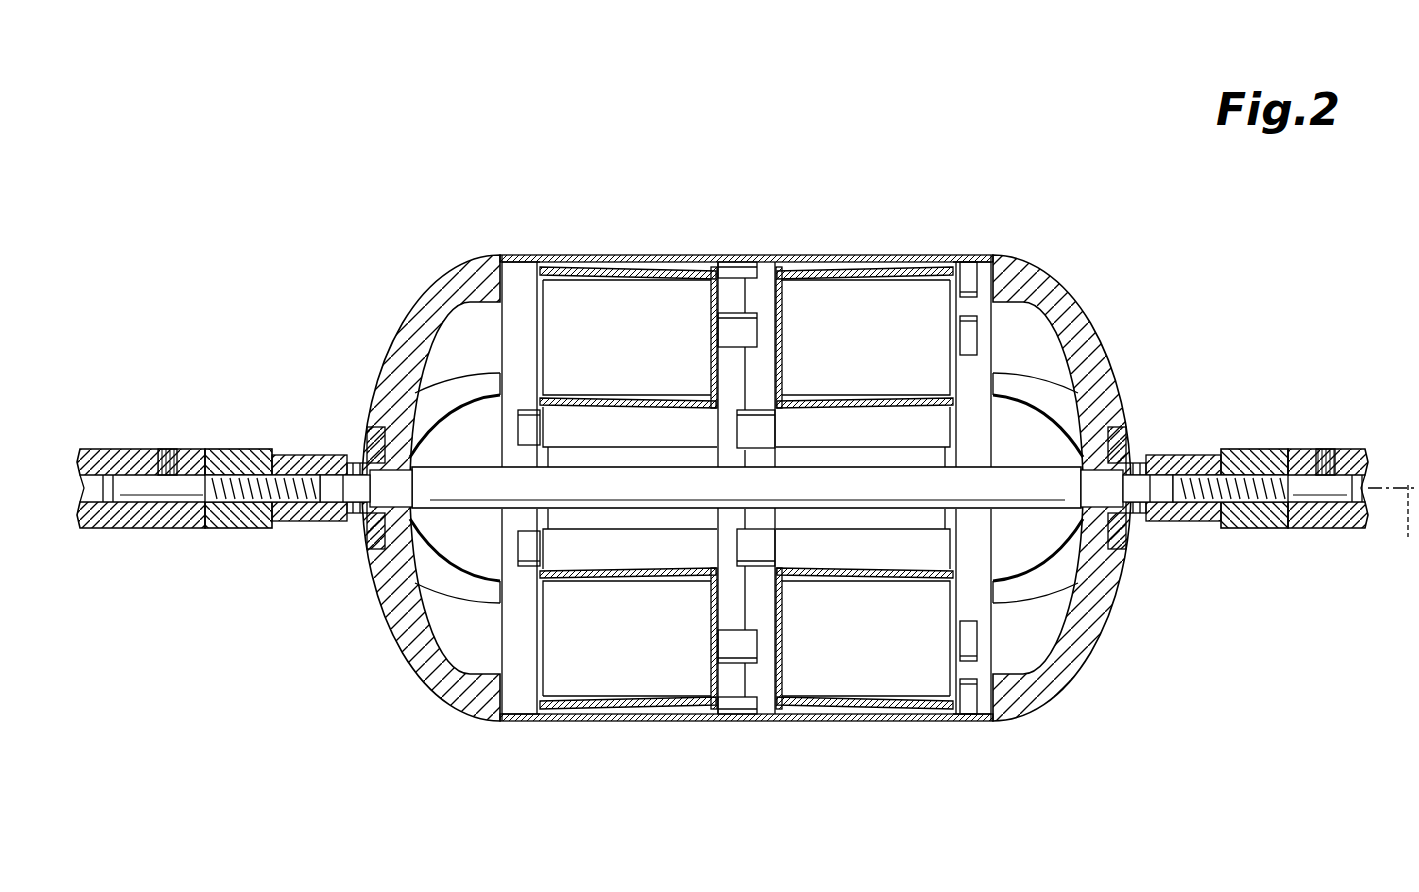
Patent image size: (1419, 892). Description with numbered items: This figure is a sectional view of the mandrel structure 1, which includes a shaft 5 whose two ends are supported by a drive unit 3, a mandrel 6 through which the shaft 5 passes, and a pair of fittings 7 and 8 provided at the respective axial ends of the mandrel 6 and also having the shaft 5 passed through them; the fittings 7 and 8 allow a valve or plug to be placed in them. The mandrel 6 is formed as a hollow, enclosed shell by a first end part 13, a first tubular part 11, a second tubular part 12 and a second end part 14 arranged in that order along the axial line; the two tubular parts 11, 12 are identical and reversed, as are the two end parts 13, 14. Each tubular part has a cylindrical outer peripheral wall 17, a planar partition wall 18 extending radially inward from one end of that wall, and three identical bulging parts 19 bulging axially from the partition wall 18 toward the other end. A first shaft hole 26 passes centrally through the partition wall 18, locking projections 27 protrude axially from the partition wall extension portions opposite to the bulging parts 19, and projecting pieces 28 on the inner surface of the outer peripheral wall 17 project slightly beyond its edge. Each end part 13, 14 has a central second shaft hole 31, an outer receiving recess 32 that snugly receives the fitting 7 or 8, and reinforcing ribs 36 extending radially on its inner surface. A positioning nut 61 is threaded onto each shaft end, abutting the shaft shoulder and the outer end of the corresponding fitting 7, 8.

The mandrel structure 1 is at (973, 157).
The drive unit 3 is at (110, 530).
The shaft 5 is at (893, 514).
The mandrel 6 is at (783, 198).
The first fitting 7 is at (312, 452).
The second fitting 8 is at (1188, 452).
The first tubular part 11 is at (603, 253).
The second tubular part 12 is at (848, 253).
The first end part 13 is at (415, 283).
The second end part 14 is at (1078, 283).
The outer peripheral wall 17 is at (633, 727).
The partition wall 18 is at (543, 540).
The bulging part 19 is at (720, 294).
The first shaft hole 26 is at (573, 476).
The locking projection 27 is at (525, 433).
The projecting piece 28 is at (765, 547).
The second shaft hole 31 is at (408, 500).
The receiving recess 32 is at (366, 541).
The reinforcing rib 36 is at (463, 383).
The positioning nut 61 is at (232, 447).